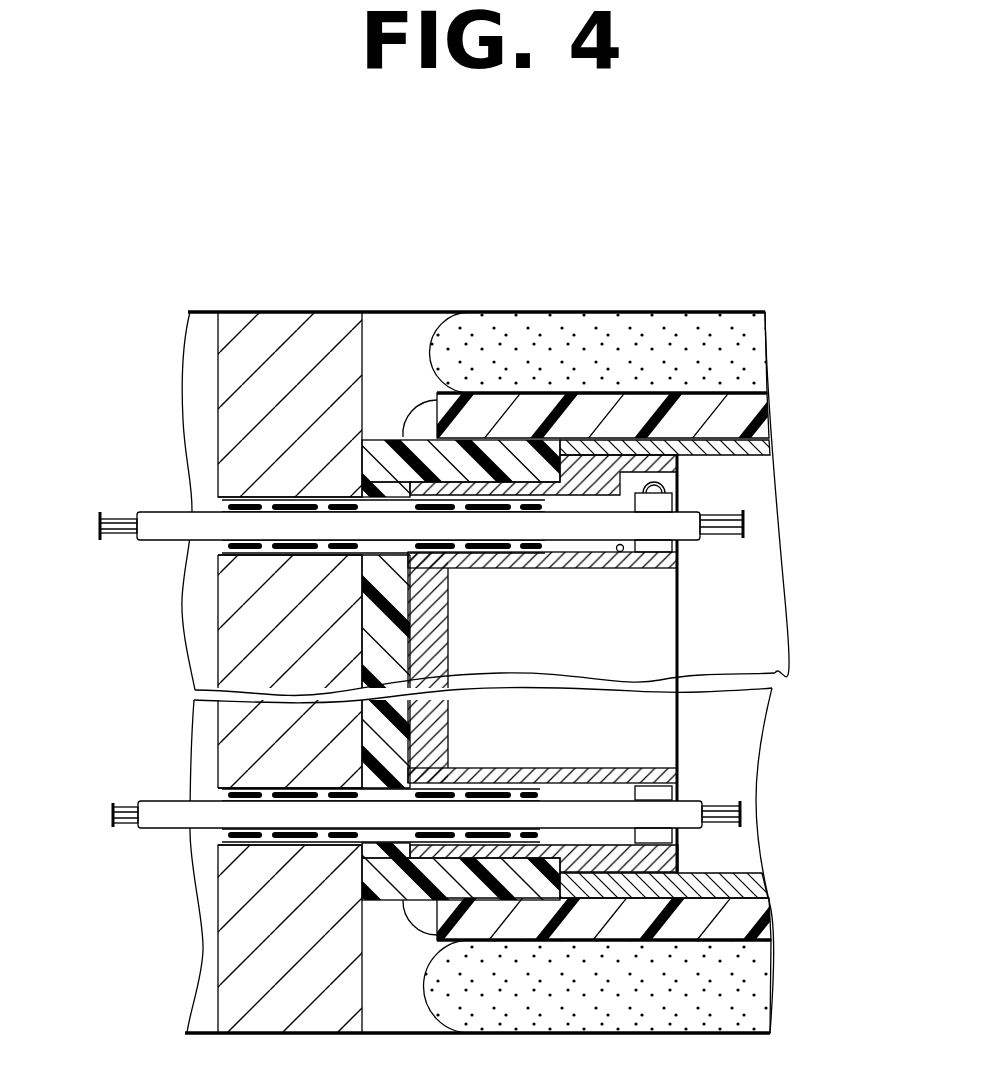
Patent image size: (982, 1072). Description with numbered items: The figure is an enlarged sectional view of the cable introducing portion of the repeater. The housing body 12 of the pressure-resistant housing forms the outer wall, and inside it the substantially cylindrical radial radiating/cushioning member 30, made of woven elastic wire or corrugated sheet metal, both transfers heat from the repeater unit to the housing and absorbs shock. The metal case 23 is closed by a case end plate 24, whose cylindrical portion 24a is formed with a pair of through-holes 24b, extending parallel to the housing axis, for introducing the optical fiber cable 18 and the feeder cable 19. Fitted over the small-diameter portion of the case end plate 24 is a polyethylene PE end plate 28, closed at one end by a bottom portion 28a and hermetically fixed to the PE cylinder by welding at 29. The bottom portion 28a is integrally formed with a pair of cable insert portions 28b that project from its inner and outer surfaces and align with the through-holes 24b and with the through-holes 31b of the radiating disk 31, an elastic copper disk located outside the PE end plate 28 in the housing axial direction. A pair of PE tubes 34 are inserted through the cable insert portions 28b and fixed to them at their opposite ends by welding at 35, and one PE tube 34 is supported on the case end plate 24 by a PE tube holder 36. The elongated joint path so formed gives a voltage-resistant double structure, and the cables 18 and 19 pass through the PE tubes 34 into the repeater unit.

The housing body 12 is at (408, 313).
The optical fiber cable 18 is at (115, 515).
The feeder cable 19 is at (118, 805).
The metal case 23 is at (760, 447).
The case end plate 24 is at (587, 462).
The hub cylindrical wall 24a is at (445, 638).
The through-holes 24b is at (622, 568).
The PE end plate 28 is at (510, 440).
The bottom portion 28a is at (372, 635).
The cable insert portions 28b is at (405, 437).
The welding 29 is at (432, 400).
The radial radiating/cushioning member 30 is at (745, 340).
The radiating disk 31 is at (324, 332).
The through-holes 31b is at (278, 497).
The PE tube 34 is at (690, 505).
The welding 35 is at (235, 505).
The PE tube holder 36 is at (688, 548).